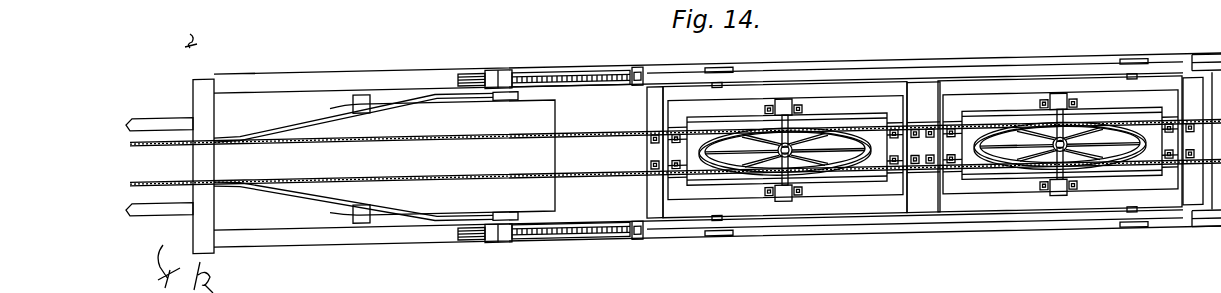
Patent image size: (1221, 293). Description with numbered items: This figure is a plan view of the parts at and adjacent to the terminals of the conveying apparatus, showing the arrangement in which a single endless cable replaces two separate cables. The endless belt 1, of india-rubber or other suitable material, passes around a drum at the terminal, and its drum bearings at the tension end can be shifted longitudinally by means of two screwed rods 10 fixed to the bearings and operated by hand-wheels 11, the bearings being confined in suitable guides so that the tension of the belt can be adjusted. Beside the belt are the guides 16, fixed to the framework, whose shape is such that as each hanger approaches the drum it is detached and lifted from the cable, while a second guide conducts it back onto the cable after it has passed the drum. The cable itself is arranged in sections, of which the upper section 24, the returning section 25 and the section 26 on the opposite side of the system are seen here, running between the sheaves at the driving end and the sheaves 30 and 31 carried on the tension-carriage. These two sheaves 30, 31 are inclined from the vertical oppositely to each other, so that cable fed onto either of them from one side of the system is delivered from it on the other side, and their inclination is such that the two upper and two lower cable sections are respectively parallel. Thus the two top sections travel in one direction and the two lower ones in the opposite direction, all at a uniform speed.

The endless belt 1 is at (542, 118).
The screwed rods 10 is at (580, 70).
The hand-wheels 11 is at (635, 73).
The guides 16 is at (307, 116).
The cable section 24 is at (578, 128).
The cable section 25 is at (857, 119).
The cable section 26 is at (587, 172).
The sheave 30 is at (1126, 140).
The sheave 31 is at (857, 161).